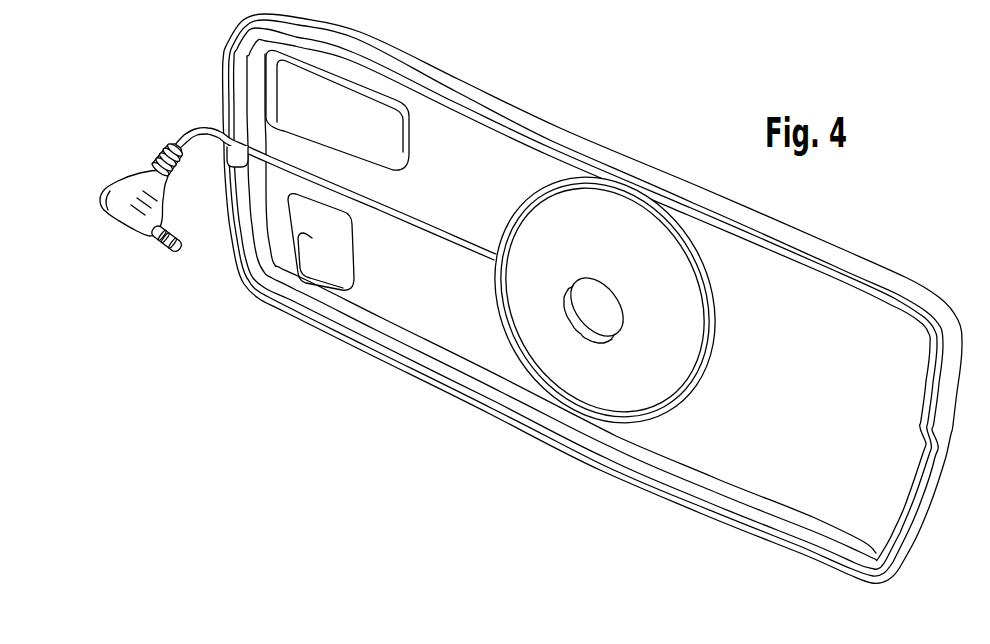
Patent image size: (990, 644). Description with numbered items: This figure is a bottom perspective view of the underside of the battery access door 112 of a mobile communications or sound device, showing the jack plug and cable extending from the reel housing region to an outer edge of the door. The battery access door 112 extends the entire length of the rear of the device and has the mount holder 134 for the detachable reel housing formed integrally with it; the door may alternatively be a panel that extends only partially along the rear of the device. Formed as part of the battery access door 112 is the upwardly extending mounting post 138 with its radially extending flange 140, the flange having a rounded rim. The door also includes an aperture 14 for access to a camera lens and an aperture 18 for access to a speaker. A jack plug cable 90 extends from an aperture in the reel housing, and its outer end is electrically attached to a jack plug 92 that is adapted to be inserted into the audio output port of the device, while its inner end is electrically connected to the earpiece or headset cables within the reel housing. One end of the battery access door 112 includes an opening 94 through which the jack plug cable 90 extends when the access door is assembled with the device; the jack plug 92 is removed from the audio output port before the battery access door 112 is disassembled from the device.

The aperture 14 is at (278, 97).
The aperture 18 is at (306, 284).
The jack plug cable 90 is at (397, 207).
The jack plug 92 is at (121, 180).
The opening 94 is at (233, 166).
The battery access door 112 is at (807, 233).
The mount holder 134 is at (582, 135).
The mounting post 138 is at (583, 317).
The flange 140 is at (603, 302).